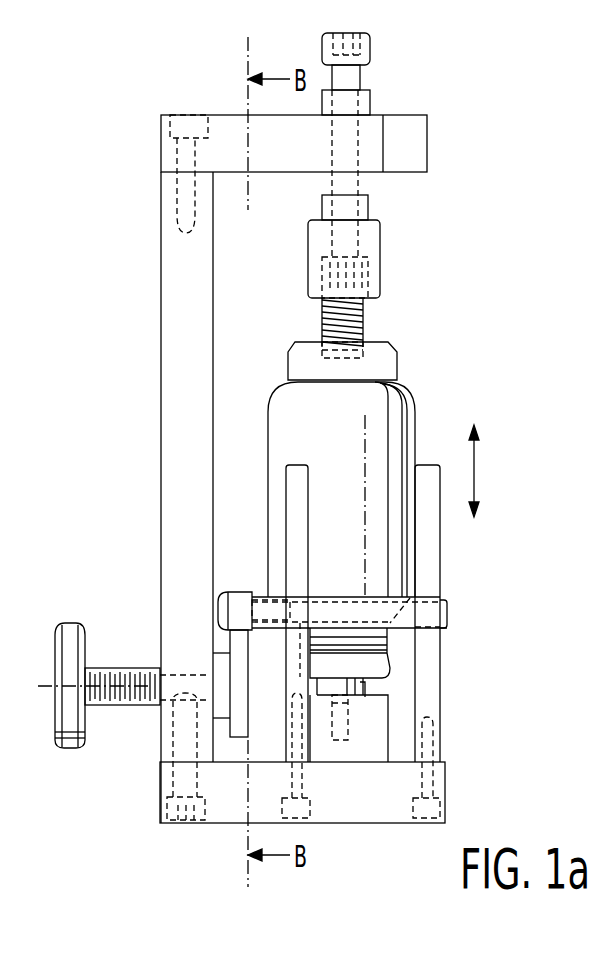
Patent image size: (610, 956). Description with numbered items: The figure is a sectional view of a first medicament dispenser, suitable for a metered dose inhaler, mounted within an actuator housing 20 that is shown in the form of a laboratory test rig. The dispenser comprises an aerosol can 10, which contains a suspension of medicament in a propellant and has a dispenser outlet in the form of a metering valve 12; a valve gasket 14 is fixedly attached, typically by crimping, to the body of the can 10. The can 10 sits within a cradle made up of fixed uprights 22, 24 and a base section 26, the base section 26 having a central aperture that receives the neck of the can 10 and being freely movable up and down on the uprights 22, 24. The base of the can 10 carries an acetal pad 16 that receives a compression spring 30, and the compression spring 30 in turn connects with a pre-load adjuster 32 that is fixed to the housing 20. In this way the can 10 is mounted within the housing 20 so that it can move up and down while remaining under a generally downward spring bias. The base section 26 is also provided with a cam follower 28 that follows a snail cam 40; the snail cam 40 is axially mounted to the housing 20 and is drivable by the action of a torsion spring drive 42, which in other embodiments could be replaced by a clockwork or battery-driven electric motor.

The aerosol can 10 is at (415, 425).
The metering valve 12 is at (340, 720).
The valve gasket 14 is at (390, 668).
The acetal pad 16 is at (397, 355).
The actuator housing 20 is at (180, 400).
The fixed upright 22 is at (427, 545).
The fixed upright 24 is at (298, 508).
The base section 26 is at (447, 612).
The cam follower 28 is at (240, 592).
The compression spring 30 is at (363, 318).
The pre-load adjuster 32 is at (380, 240).
The snail cam 40 is at (235, 648).
The torsion spring drive 42 is at (118, 707).